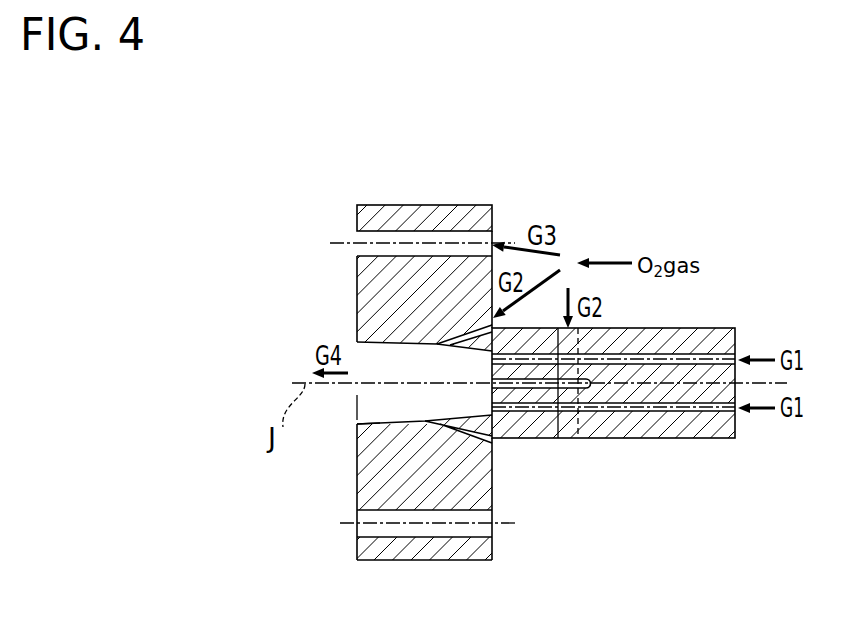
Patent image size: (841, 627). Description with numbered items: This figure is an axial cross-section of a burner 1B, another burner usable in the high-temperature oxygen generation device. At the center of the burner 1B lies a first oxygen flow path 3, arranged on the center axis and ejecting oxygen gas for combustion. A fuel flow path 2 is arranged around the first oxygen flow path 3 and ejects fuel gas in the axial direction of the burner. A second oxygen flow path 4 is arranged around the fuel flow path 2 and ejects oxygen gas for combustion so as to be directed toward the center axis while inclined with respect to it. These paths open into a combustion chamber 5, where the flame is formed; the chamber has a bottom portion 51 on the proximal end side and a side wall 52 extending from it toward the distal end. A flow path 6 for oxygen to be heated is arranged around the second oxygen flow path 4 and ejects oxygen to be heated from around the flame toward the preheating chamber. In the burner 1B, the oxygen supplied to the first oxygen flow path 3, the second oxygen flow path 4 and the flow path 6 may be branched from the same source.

The burner 1B is at (362, 172).
The fuel flow path 2 is at (486, 408).
The first oxygen flow path 3 is at (487, 380).
The second oxygen flow path 4 is at (428, 347).
The combustion chamber 5 is at (357, 406).
The bottom portion 51 is at (486, 398).
The side wall 52 is at (405, 420).
The flow path for oxygen to be heated 6 is at (365, 231).